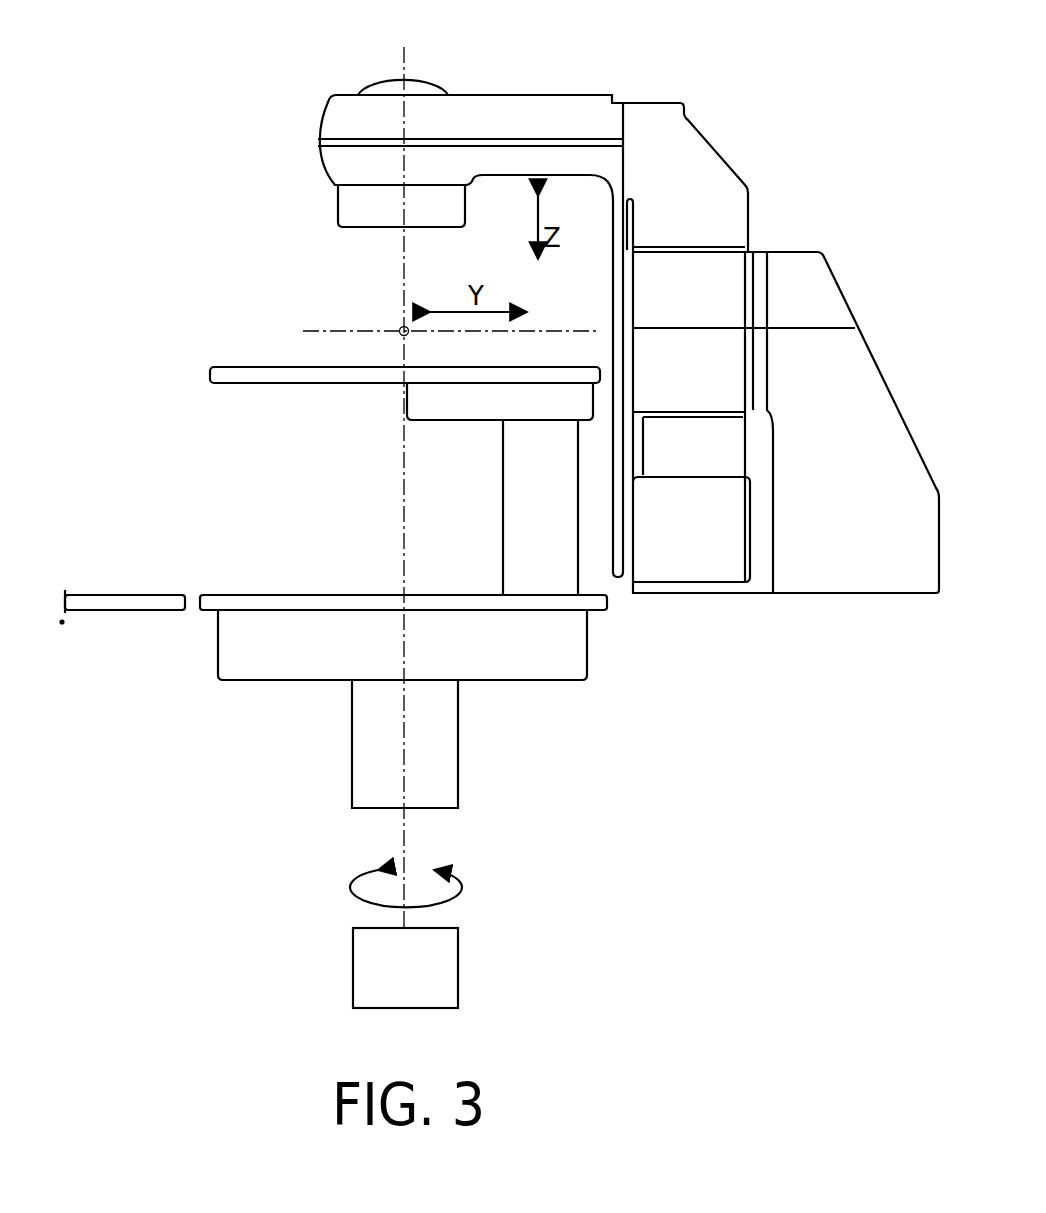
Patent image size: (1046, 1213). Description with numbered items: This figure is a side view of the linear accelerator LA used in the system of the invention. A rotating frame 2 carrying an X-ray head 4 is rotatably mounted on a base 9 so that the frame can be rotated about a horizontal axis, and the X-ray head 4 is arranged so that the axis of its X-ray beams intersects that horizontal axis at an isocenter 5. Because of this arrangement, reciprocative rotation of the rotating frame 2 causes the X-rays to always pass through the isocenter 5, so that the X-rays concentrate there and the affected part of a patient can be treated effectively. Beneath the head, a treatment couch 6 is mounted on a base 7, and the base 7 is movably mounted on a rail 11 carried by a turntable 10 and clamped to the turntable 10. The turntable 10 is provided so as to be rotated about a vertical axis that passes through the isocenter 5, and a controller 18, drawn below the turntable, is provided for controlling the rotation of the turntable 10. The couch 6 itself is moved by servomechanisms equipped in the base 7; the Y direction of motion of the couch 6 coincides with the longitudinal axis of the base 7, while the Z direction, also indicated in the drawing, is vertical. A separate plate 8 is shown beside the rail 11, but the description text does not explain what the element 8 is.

The linear accelerator LA is at (696, 92).
The rotating frame 2 is at (715, 176).
The X-ray head 4 is at (332, 115).
The isocenter 5 is at (401, 328).
The treatment couch 6 is at (240, 367).
The base 7 is at (440, 412).
The plate 8 is at (122, 595).
The base 9 is at (865, 392).
The turntable 10 is at (577, 653).
The rail 11 is at (313, 594).
The controller 18 is at (447, 973).